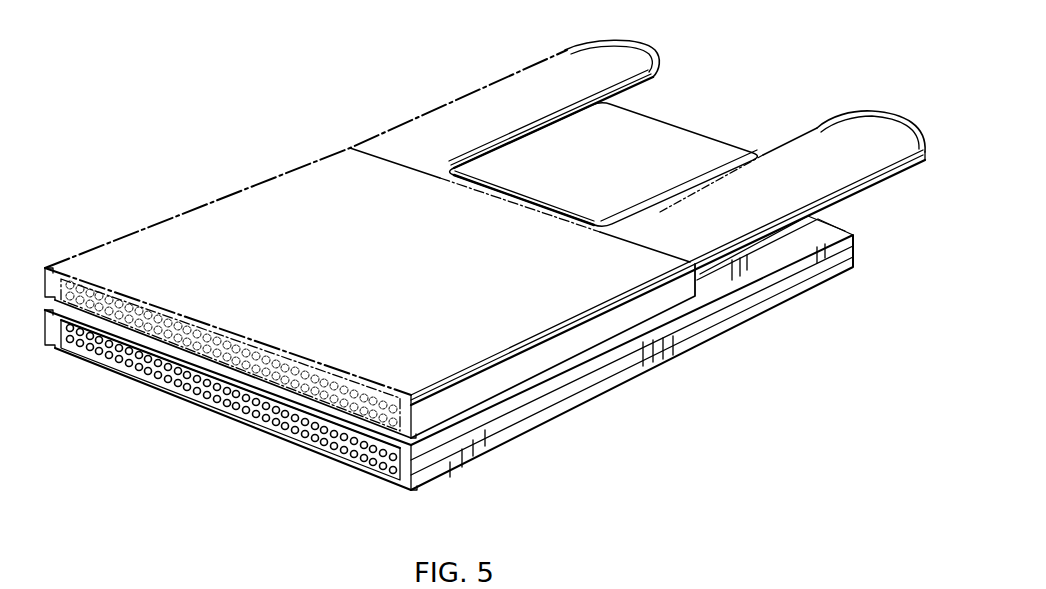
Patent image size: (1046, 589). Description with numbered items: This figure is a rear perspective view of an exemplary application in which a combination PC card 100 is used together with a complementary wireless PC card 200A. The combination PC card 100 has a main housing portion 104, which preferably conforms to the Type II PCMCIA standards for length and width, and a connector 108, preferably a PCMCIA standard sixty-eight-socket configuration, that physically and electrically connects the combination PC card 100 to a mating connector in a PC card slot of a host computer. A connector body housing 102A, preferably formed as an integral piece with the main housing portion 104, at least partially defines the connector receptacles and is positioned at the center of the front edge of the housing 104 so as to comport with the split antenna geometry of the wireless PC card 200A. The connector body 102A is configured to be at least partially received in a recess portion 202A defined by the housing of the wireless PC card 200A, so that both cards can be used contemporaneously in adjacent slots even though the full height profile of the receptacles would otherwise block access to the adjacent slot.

The combination PC card 100 is at (597, 426).
The main housing portion 104 is at (746, 304).
The connector 108 is at (192, 388).
The wireless PC card 200A is at (184, 181).
The connector body housing 102A is at (567, 146).
The recess portion 202A is at (695, 100).